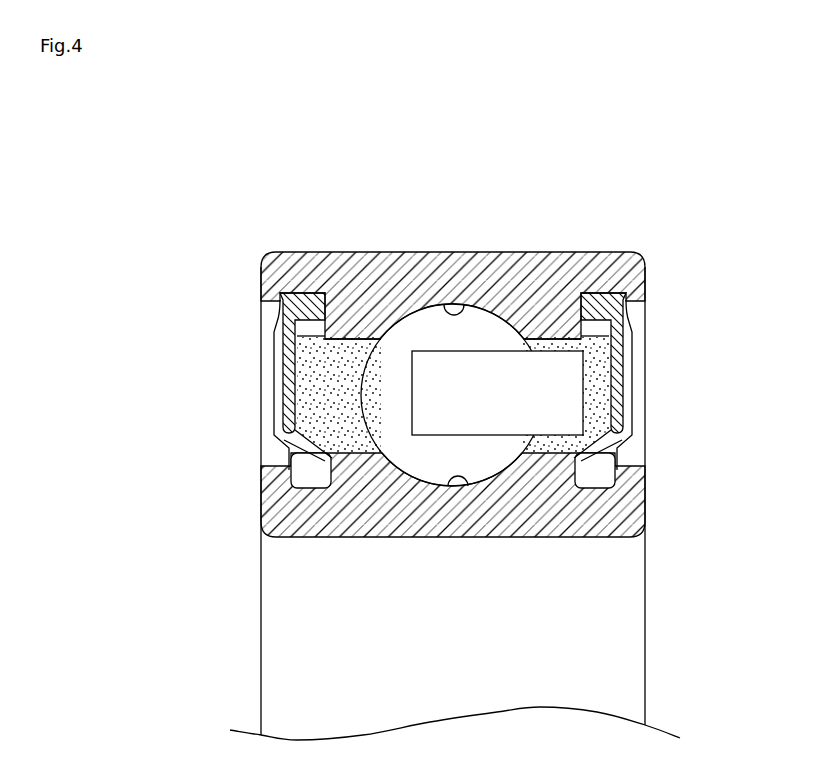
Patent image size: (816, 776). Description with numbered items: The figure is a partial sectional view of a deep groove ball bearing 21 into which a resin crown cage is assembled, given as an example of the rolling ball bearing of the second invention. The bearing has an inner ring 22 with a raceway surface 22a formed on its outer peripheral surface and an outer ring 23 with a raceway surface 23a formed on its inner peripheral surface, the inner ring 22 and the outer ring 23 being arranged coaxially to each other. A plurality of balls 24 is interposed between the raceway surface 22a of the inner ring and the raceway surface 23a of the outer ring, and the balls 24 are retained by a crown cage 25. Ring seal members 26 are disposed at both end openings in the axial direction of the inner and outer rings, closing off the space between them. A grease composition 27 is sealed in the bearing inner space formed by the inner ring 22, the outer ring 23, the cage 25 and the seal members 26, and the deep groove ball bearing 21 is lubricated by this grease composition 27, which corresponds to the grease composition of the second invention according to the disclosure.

The deep groove ball bearing 21 is at (451, 453).
The inner ring 22 is at (593, 508).
The raceway surface 22a is at (463, 492).
The outer ring 23 is at (548, 275).
The raceway surface 23a is at (455, 305).
The balls 24 is at (413, 333).
The crown cage 25 is at (565, 408).
The ring seal members 26 is at (270, 381).
The grease composition 27 is at (298, 390).